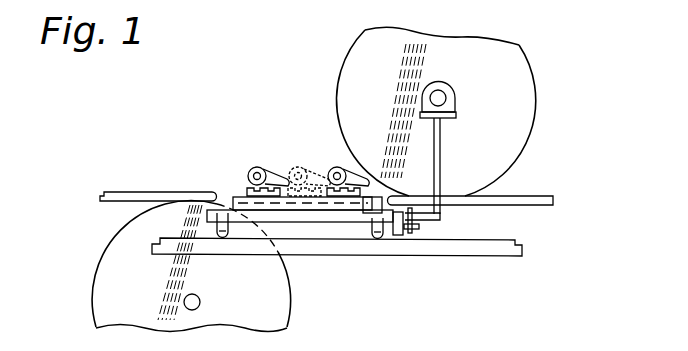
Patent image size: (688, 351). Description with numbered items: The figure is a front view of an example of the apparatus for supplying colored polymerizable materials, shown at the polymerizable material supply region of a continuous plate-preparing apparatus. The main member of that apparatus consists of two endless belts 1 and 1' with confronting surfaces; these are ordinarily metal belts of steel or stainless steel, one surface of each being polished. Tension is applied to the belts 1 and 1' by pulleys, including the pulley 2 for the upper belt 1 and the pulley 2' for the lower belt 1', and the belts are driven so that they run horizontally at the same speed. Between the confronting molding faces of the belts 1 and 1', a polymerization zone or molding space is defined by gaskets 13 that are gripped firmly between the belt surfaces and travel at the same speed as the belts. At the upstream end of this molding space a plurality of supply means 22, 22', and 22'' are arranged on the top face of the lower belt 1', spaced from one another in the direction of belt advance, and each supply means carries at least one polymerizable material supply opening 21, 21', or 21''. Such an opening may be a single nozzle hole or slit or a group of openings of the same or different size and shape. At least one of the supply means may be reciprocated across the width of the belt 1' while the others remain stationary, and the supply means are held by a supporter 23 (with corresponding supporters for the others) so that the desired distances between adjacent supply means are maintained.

The endless belt 1 is at (476, 188).
The endless belt 1' is at (365, 230).
The pulley 2 is at (455, 131).
The pulley 2' is at (207, 266).
The gasket 13 is at (119, 191).
The polymerizable material supply opening 21 is at (266, 167).
The polymerizable material supply opening 21' is at (309, 162).
The polymerizable material supply opening 21'' is at (361, 228).
The supply means 22 is at (223, 151).
The supply means 22' is at (272, 141).
The supply means 22'' is at (317, 129).
The supporter 23 is at (247, 195).